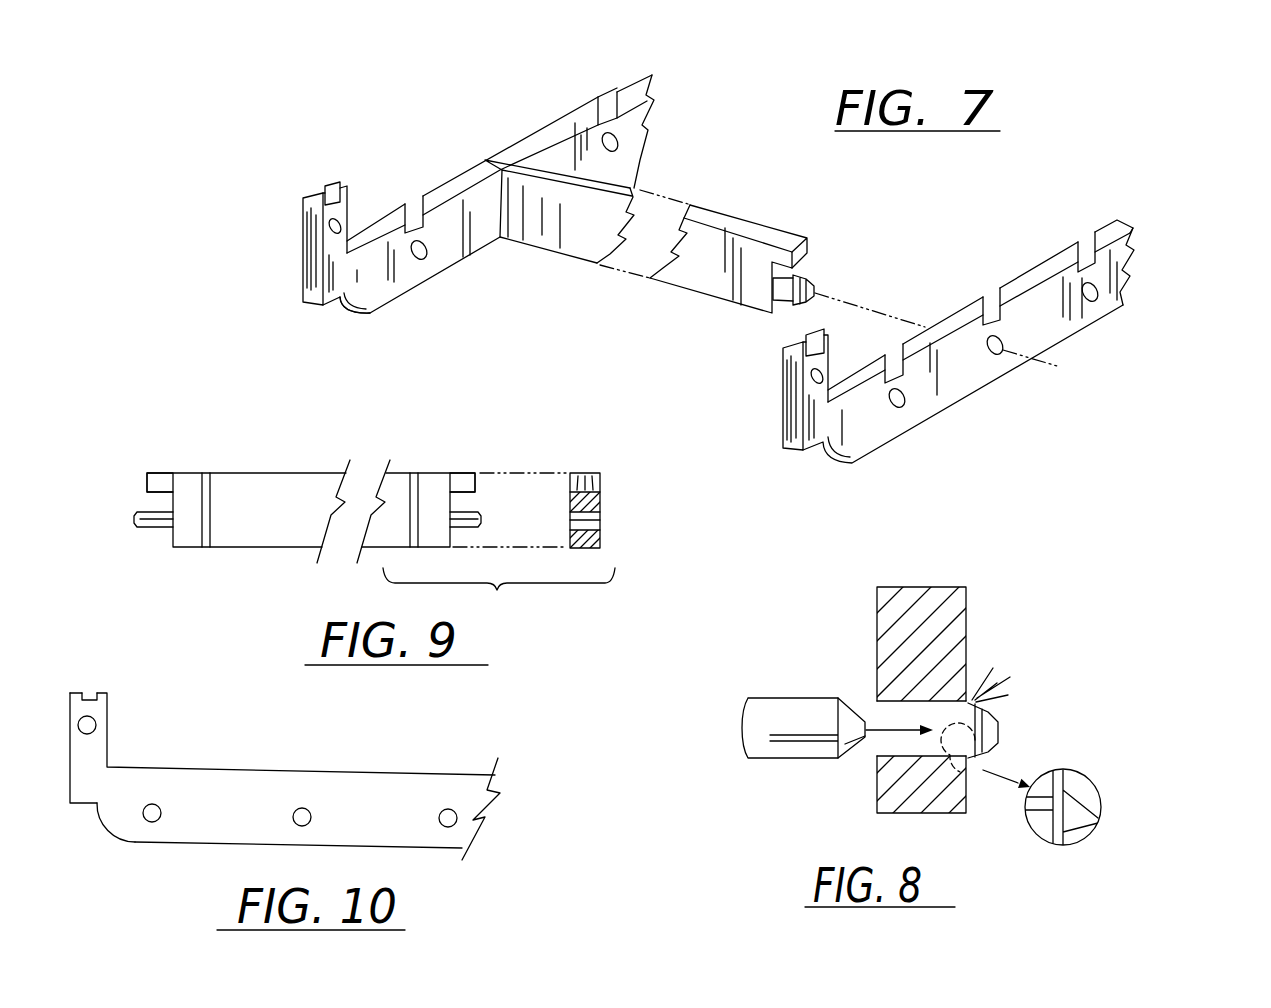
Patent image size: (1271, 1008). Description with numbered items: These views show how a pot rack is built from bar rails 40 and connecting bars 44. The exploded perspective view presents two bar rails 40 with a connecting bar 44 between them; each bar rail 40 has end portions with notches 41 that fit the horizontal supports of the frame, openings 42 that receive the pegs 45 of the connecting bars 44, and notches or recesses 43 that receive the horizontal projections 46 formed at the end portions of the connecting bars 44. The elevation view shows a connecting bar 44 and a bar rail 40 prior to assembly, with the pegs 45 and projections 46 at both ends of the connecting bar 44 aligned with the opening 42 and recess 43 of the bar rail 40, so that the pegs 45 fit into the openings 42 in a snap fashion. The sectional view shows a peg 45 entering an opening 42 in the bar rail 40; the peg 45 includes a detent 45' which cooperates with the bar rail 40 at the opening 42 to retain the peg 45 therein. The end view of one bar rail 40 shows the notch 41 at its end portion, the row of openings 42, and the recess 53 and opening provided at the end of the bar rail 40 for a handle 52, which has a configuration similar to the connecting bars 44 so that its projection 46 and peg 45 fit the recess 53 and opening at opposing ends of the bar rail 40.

In FIG. 7, the bar rail 40 is at (968, 380).
In FIG. 9, the bar rail 40 is at (604, 499).
In FIG. 8, the bar rail 40 is at (935, 588).
In FIG. 7, the notch 41 is at (340, 306).
In FIG. 10, the notch 41 is at (112, 826).
In FIG. 7, the opening 42 is at (617, 145).
In FIG. 9, the opening 42 is at (608, 518).
In FIG. 8, the opening 42 is at (895, 713).
In FIG. 7, the notch or recess 43 is at (589, 82).
In FIG. 9, the notch or recess 43 is at (595, 478).
In FIG. 7, the connecting bar 44 is at (702, 268).
In FIG. 9, the connecting bar 44 is at (292, 527).
In FIG. 7, the peg 45 is at (813, 321).
In FIG. 9, the peg 45 is at (341, 533).
In FIG. 8, the peg 45 is at (803, 701).
In FIG. 8, the detent 45' is at (1086, 756).
In FIG. 9, the horizontal projection 46 is at (147, 490).
In FIG. 7, the handle 52 is at (335, 234).
In FIG. 10, the handle 52 is at (96, 727).
In FIG. 7, the recess 53 is at (325, 178).
In FIG. 10, the recess 53 is at (93, 684).